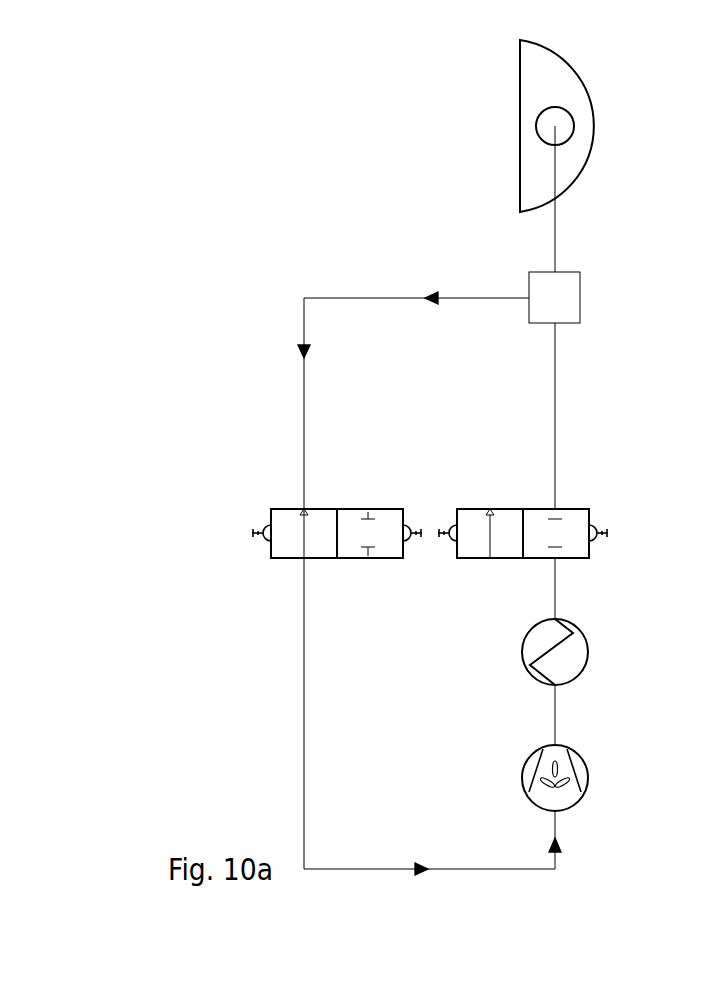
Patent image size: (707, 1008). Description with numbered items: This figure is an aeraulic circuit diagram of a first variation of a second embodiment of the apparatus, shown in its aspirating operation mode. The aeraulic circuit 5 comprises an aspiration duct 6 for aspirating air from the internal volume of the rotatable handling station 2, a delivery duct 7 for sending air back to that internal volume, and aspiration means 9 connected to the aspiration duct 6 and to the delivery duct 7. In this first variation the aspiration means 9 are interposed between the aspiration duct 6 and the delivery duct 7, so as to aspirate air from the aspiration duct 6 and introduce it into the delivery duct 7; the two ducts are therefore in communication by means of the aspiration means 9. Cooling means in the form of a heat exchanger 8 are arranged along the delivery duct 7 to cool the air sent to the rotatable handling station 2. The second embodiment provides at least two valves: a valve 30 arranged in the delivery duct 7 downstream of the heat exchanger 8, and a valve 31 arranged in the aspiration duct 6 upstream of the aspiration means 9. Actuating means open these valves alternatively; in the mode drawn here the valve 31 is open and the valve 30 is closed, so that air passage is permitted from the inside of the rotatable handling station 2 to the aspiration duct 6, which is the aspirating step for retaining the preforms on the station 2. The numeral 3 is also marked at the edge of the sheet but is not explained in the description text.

The rotatable handling station 2 is at (557, 75).
The pressure vessel 3 is at (703, 469).
The aeraulic circuit 5 is at (640, 427).
The aspiration duct 6 is at (331, 298).
The delivery duct 7 is at (555, 438).
The heat exchanger 8 is at (576, 652).
The aspiration means 9 is at (570, 795).
The valve 30 is at (575, 525).
The valve 31 is at (304, 533).